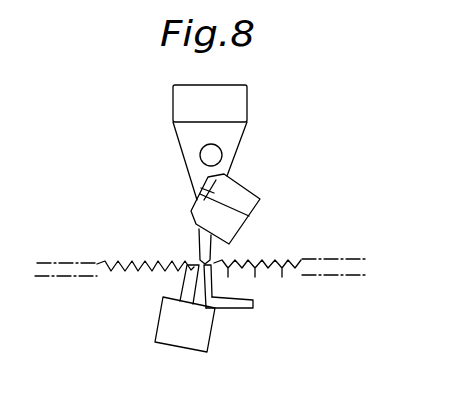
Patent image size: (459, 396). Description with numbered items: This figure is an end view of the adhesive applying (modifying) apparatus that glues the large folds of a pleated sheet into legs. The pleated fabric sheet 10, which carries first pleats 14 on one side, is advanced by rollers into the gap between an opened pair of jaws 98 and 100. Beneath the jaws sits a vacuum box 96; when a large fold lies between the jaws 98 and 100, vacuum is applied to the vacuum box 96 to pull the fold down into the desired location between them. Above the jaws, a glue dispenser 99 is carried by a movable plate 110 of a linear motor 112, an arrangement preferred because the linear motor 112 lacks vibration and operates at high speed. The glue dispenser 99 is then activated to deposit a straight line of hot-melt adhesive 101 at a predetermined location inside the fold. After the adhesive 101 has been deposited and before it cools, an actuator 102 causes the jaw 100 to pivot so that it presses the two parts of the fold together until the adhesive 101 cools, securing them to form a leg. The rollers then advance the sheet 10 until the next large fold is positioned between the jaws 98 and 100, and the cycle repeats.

The second sheet 10 is at (102, 270).
The first pleats 14 is at (217, 260).
The vacuum box 96 is at (200, 335).
The jaw 98 is at (183, 283).
The glue dispenser 99 is at (236, 227).
The jaw 100 is at (217, 277).
The hot-melt adhesive 101 is at (200, 263).
The actuator 102 is at (252, 304).
The movable plate 110 is at (228, 138).
The linear motor 112 is at (237, 100).